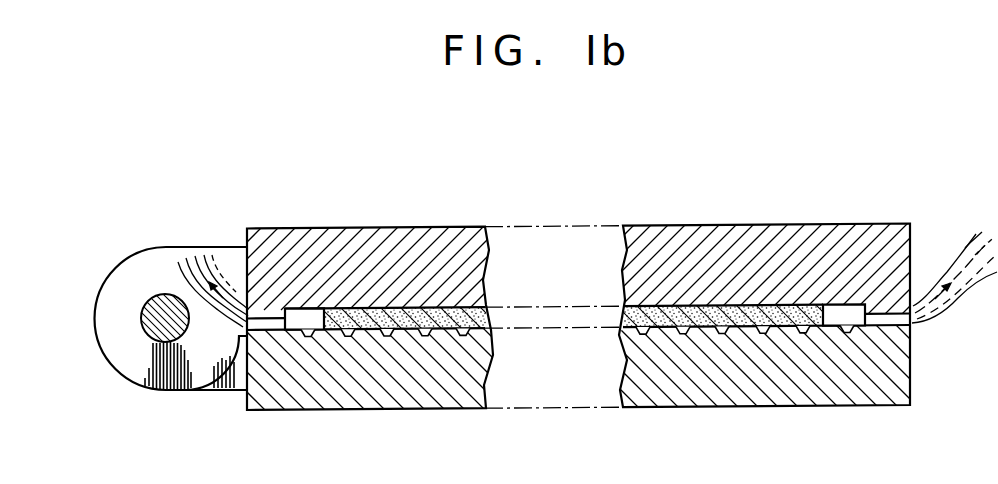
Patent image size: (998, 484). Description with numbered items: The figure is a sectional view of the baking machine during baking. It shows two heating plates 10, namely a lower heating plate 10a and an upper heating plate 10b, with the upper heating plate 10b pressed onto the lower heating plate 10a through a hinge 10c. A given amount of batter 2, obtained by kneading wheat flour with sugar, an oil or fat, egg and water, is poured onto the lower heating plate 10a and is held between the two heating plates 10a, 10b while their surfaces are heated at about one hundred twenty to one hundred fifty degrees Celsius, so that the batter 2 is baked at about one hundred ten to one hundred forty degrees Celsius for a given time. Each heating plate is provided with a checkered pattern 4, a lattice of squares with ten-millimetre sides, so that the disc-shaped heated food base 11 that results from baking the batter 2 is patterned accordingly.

The heating plates 10 is at (543, 298).
The lower heating plate 10a is at (400, 395).
The upper heating plate 10b is at (369, 245).
The hinge 10c is at (130, 248).
The batter 2 is at (569, 254).
The heated food base 11 is at (711, 306).
The checkered pattern 4 is at (386, 333).